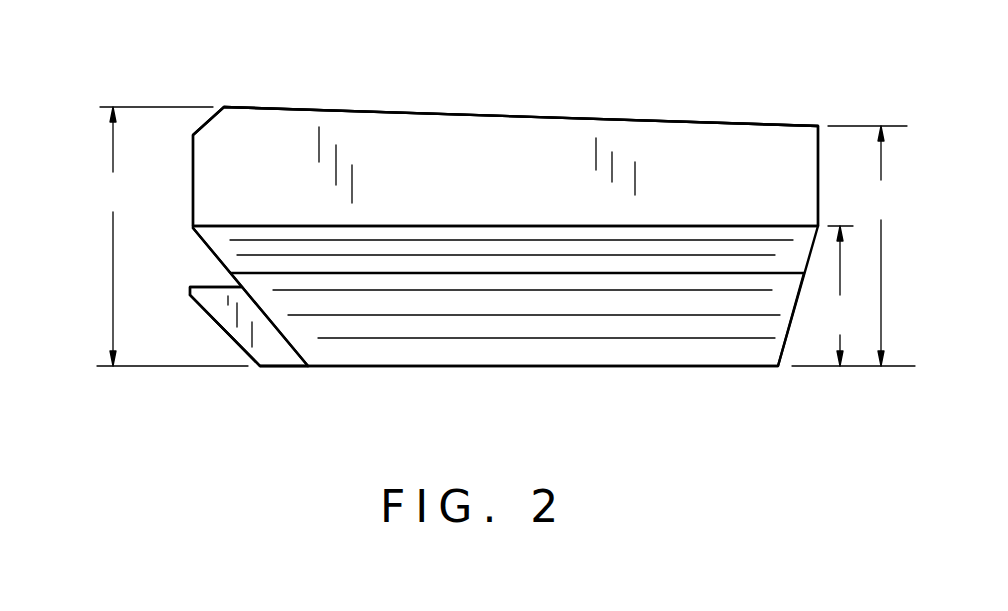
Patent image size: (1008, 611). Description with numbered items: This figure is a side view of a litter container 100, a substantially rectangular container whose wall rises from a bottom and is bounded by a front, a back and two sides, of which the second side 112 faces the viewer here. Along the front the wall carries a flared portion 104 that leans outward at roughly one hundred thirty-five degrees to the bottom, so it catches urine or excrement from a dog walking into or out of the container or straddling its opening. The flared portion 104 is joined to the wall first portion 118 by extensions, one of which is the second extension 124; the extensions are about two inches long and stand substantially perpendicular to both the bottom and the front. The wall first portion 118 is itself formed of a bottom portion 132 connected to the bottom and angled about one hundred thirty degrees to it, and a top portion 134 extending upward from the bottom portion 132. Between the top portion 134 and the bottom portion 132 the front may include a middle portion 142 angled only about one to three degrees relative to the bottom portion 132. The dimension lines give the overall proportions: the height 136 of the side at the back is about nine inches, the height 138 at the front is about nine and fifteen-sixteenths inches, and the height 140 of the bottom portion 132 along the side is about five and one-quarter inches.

The litter container 100 is at (187, 77).
The flared portion 104 is at (220, 336).
The second side 112 is at (257, 138).
The wall first portion 118 is at (618, 118).
The second extension 124 is at (267, 352).
The bottom portion 132 is at (616, 343).
The top portion 134 is at (508, 252).
The height 136 is at (853, 246).
The height 138 is at (170, 236).
The height 140 is at (841, 296).
The middle portion 142 is at (218, 260).